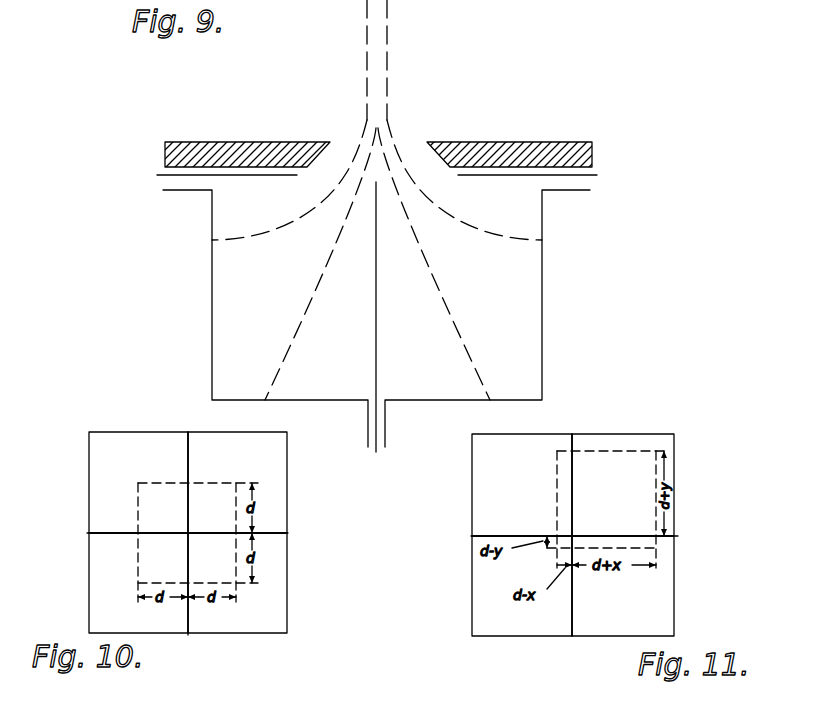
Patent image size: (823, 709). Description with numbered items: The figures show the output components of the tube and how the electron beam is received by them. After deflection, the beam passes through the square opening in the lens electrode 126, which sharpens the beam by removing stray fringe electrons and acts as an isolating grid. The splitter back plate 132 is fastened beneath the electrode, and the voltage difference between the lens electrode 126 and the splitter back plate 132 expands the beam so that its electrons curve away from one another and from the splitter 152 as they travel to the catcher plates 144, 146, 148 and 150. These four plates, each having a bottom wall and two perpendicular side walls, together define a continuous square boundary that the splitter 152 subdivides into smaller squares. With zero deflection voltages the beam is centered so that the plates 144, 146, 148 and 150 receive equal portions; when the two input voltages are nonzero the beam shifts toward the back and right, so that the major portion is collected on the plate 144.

In FIG. 9, the lens electrode 126 is at (289, 120).
In FIG. 9, the splitter back plate 132 is at (250, 177).
In FIG. 9, the catcher plate 144 is at (542, 278).
In FIG. 10, the catcher plate 144 is at (287, 472).
In FIG. 11, the catcher plate 144 is at (673, 486).
In FIG. 9, the catcher plate 146 is at (212, 279).
In FIG. 10, the catcher plate 146 is at (89, 476).
In FIG. 11, the catcher plate 146 is at (496, 485).
In FIG. 10, the catcher plate 148 is at (89, 585).
In FIG. 11, the catcher plate 148 is at (472, 593).
In FIG. 10, the catcher plate 150 is at (287, 582).
In FIG. 11, the catcher plate 150 is at (676, 592).
In FIG. 9, the splitter 152 is at (378, 320).